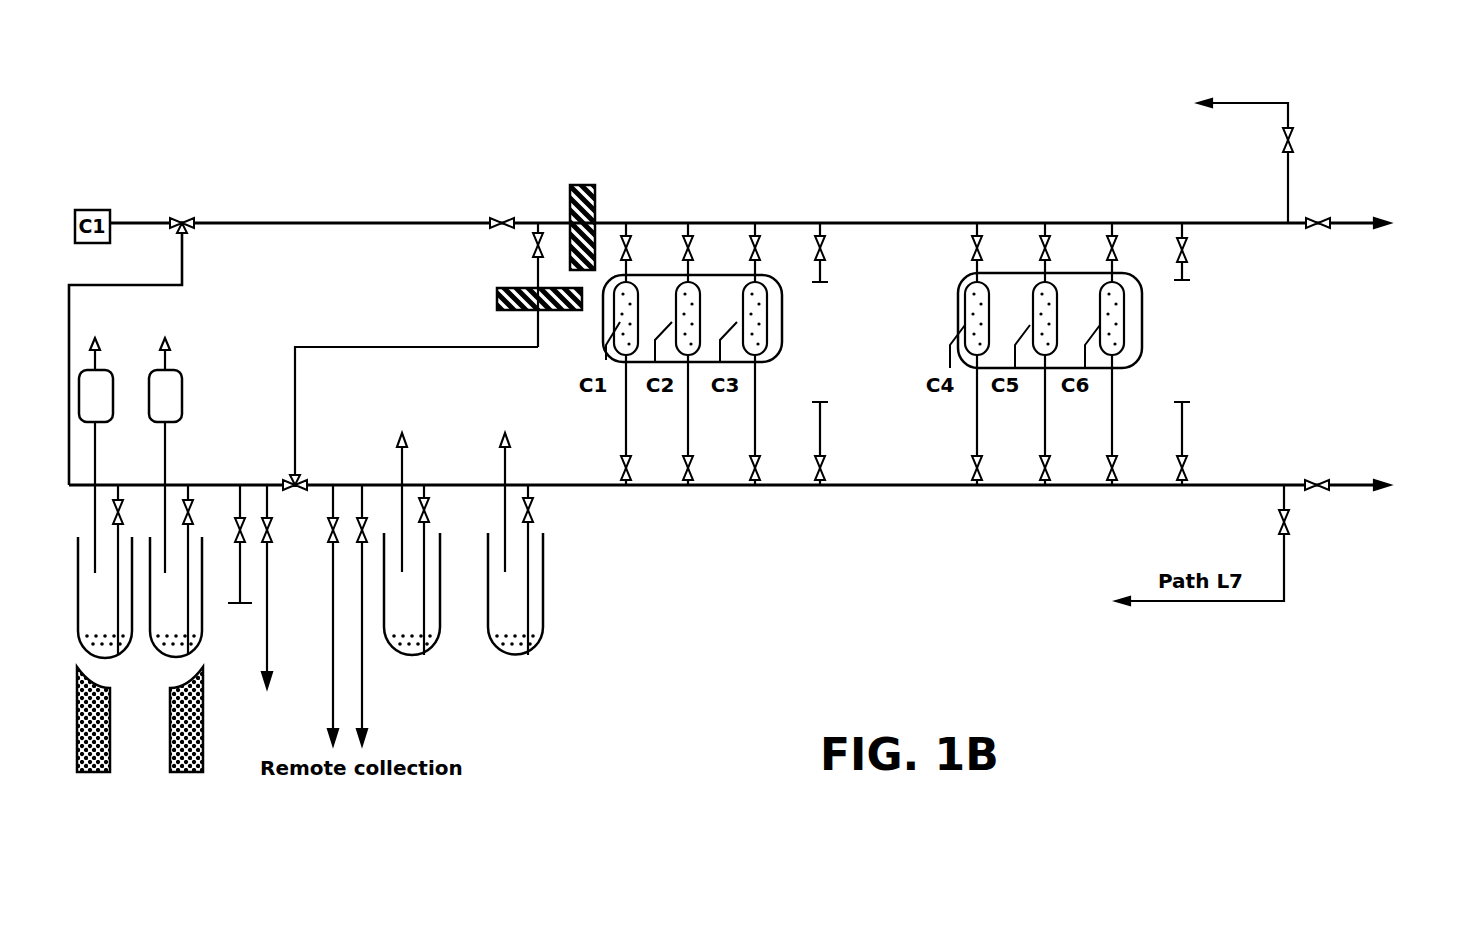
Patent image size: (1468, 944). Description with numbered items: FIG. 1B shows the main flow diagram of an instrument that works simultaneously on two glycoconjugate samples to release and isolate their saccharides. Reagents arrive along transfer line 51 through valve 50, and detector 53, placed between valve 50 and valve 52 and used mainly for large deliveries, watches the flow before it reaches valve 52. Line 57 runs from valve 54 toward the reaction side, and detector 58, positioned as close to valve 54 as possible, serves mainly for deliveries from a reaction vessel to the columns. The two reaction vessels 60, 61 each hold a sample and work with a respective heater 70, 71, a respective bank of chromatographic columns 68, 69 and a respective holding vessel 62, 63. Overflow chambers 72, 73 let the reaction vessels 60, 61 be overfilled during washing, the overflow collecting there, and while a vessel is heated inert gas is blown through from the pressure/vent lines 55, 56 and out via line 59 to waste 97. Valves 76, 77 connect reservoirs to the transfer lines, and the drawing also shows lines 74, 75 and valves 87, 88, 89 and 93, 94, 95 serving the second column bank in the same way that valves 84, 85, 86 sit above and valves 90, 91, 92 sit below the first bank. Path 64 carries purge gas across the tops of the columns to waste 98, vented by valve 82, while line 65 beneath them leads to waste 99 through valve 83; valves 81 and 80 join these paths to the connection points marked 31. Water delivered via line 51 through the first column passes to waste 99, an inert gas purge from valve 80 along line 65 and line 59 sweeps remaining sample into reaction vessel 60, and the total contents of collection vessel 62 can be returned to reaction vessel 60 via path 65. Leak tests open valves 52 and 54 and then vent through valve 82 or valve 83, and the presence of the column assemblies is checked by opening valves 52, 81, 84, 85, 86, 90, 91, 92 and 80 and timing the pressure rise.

The connection line to path 31 is at (1179, 350).
The valve 50 is at (182, 215).
The line 51 is at (300, 220).
The valve 52 is at (502, 218).
The detector 53 is at (585, 183).
The valve 54 is at (530, 237).
The pressure/vent line 55 is at (98, 342).
The pressure/vent line 56 is at (168, 342).
The line 57 is at (390, 345).
The detector 58 is at (497, 299).
The line 59 is at (207, 484).
The reaction vessel 60 is at (105, 597).
The reaction vessel 61 is at (176, 597).
The holding vessel 62 is at (412, 657).
The holding vessel 63 is at (516, 657).
The path 64 is at (905, 221).
The line 65 is at (878, 488).
The chromatographic columns 68 is at (782, 322).
The chromatographic columns 69 is at (958, 322).
The heater 70 is at (95, 773).
The heater 71 is at (185, 773).
The venting chamber 72 is at (109, 364).
The chamber 73 is at (178, 364).
The inlet line 74 is at (401, 428).
The inlet line 75 is at (506, 428).
The valve 76 is at (124, 508).
The valve 77 is at (194, 508).
The valve 80 is at (1292, 528).
The valve 81 is at (1296, 150).
The valve 82 is at (1318, 232).
The valve 83 is at (1318, 478).
The valve 84 is at (627, 220).
The valve 85 is at (689, 220).
The valve 86 is at (754, 220).
The valve 87 is at (975, 220).
The valve 88 is at (1043, 220).
The valve 89 is at (1108, 220).
The valve 90 is at (625, 488).
The valve 91 is at (688, 488).
The valve 92 is at (755, 488).
The valve 93 is at (977, 488).
The valve 94 is at (1045, 488).
The valve 95 is at (1112, 488).
The waste 97 is at (272, 601).
The waste 98 is at (1405, 193).
The waste 99 is at (1394, 463).